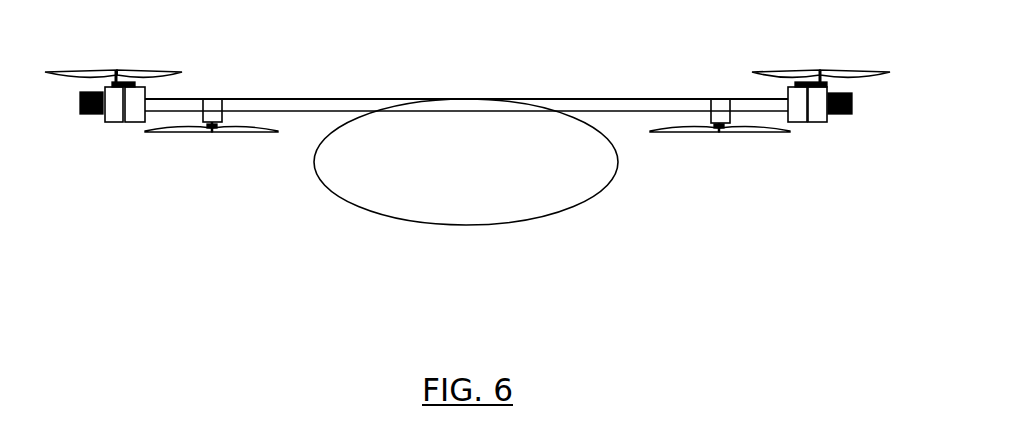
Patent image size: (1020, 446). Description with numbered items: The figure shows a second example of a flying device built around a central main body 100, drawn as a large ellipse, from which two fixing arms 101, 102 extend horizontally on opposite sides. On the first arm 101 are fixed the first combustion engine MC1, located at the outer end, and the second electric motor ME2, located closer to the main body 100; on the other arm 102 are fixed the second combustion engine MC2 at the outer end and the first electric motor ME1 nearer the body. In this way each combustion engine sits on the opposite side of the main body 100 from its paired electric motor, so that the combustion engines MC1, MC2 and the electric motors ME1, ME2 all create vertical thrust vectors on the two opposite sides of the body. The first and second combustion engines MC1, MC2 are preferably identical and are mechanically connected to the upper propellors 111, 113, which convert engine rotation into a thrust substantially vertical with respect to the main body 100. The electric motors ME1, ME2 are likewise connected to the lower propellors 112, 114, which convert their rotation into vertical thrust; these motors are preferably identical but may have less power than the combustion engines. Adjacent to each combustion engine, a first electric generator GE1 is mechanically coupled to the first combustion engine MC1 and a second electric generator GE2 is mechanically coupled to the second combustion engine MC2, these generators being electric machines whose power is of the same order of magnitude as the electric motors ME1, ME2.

The main body 100 is at (616, 177).
The fixing arm 101 is at (307, 100).
The fixing arm 102 is at (580, 100).
The propellor 111 is at (73, 72).
The propellor 112 is at (727, 137).
The propellor 113 is at (782, 72).
The propellor 114 is at (238, 135).
The first combustion engine MC1 is at (105, 118).
The second combustion engine MC2 is at (828, 120).
The first electric generator GE1 is at (130, 122).
The second electric generator GE2 is at (798, 122).
The first electric motor ME1 is at (720, 97).
The second electric motor ME2 is at (211, 98).